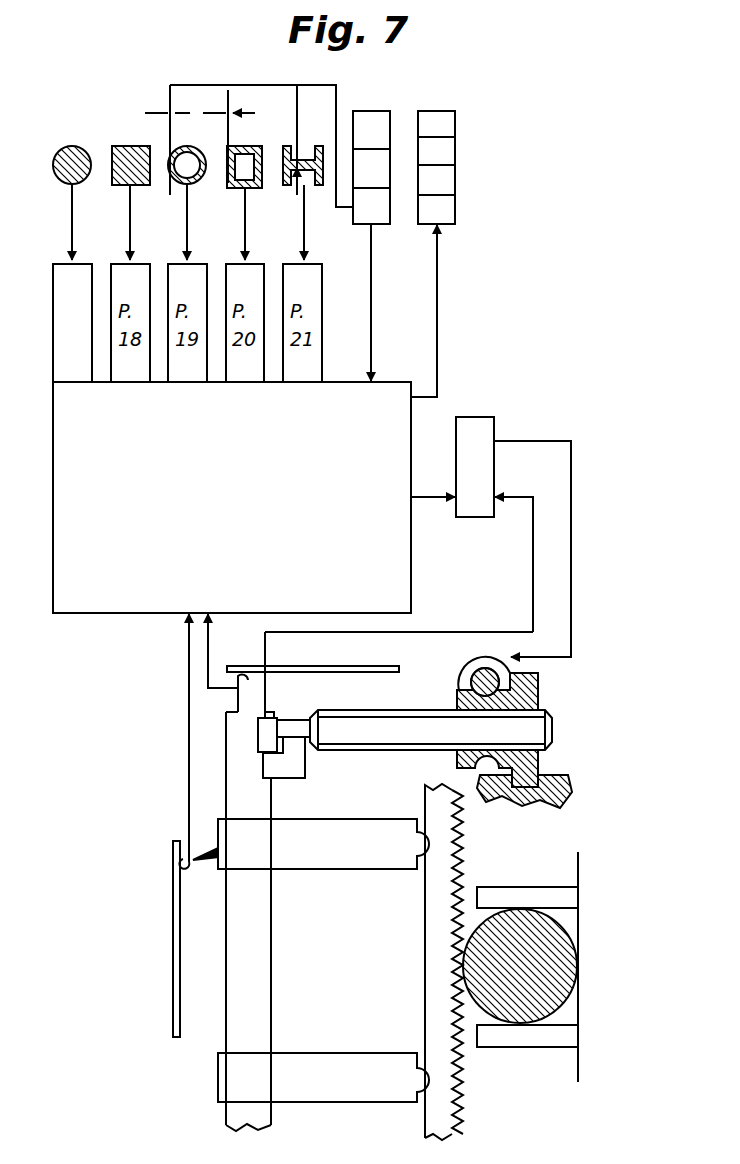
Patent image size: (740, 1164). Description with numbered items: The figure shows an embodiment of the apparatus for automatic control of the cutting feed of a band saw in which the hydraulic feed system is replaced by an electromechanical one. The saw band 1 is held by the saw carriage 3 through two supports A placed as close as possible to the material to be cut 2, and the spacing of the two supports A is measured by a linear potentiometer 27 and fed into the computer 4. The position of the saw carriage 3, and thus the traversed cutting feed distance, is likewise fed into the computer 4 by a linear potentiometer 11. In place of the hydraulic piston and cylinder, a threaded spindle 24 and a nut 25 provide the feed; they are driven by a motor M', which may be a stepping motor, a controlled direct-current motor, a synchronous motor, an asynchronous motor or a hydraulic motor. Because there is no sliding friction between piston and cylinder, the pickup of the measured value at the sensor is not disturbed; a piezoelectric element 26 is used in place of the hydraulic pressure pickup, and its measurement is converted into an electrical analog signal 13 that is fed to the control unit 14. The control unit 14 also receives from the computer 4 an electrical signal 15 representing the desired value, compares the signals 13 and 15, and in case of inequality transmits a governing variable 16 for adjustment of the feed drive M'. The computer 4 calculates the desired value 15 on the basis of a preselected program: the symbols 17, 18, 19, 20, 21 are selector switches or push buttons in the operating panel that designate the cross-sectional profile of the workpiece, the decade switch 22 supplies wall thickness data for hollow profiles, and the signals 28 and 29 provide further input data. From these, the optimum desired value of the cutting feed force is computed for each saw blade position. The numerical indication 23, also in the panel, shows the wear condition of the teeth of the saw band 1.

The saw band 1 is at (430, 958).
The material to be cut 2 is at (556, 945).
The saw carriage 3 is at (268, 946).
The computer 4 is at (110, 606).
The linear potentiometer 11 is at (336, 666).
The electrical analog signal 13 is at (533, 545).
The control unit 14 is at (470, 425).
The electrical signal 15 is at (430, 505).
The governing variable 16 is at (575, 549).
The selector switch 17 is at (72, 188).
The selector switch 18 is at (131, 188).
The selector switch 19 is at (187, 188).
The selector switch 20 is at (245, 188).
The selector switch 21 is at (304, 188).
The decade switch 22 is at (371, 232).
The numerical indication 23 is at (433, 239).
The threaded spindle 24 is at (378, 738).
The nut 25 is at (540, 702).
The piezoelectric element 26 is at (265, 735).
The linear potentiometer 27 is at (173, 937).
The signal 28 is at (189, 746).
The signal 29 is at (208, 645).
The supports A is at (363, 862).
The motor M' is at (457, 673).